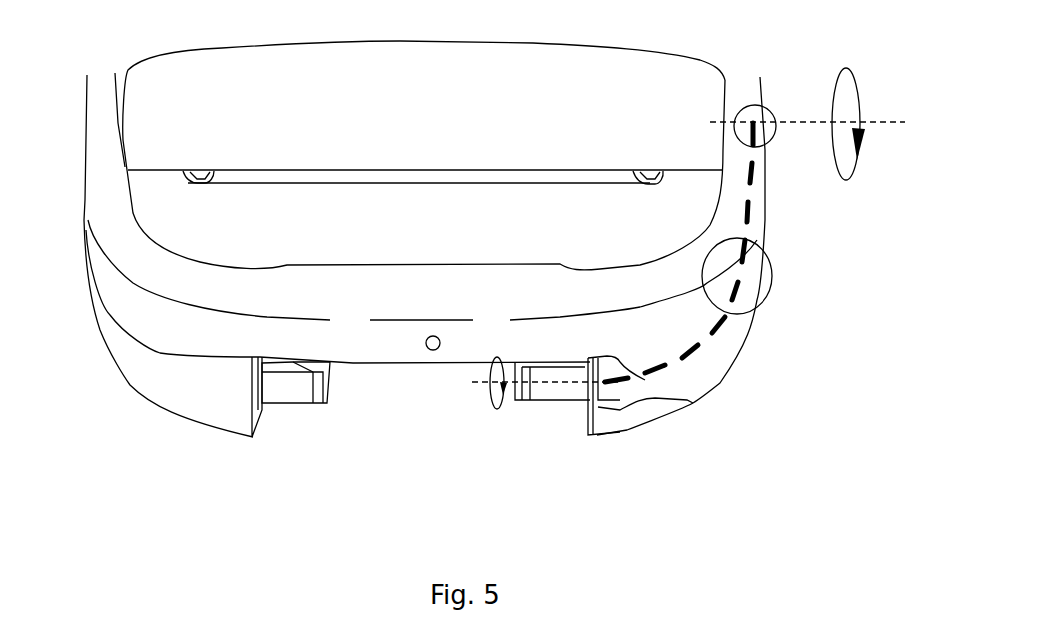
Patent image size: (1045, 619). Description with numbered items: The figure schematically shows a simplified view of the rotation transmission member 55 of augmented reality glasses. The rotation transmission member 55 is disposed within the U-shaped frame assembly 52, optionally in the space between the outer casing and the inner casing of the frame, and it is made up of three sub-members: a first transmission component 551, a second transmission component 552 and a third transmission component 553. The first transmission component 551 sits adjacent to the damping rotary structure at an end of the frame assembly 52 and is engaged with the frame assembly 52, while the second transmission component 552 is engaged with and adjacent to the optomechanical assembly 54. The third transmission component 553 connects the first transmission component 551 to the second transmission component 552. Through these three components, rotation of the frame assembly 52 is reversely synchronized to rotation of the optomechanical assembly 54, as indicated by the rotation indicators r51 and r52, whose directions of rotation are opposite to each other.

The frame assembly 52 is at (168, 355).
The optomechanical assembly 54 is at (548, 387).
The rotation indicator r52 is at (523, 389).
The rotation transmission member 55 is at (698, 350).
The first transmission component 551 is at (755, 117).
The second transmission component 552 is at (693, 403).
The third transmission component 553 is at (775, 268).
The rotation indicator r51 is at (811, 124).